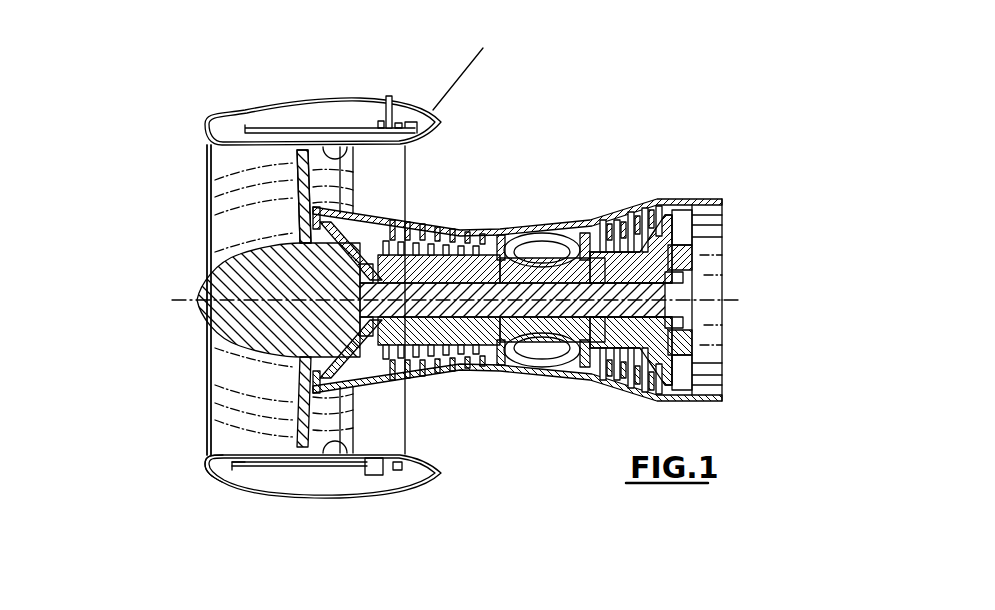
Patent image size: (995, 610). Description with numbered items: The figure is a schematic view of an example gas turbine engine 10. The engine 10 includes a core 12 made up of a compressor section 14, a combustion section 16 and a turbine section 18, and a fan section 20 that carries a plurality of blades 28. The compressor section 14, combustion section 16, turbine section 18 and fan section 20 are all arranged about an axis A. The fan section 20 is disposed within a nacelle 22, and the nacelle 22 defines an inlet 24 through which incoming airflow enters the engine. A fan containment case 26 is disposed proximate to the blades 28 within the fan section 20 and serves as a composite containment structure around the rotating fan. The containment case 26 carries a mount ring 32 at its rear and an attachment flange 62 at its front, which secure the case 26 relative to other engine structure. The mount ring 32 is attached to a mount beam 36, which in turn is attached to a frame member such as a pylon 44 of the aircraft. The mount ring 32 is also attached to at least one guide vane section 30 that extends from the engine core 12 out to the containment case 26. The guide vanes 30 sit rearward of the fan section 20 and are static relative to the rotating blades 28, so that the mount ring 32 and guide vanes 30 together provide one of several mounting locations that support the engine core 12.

The gas turbine engine 10 is at (116, 255).
The core 12 is at (485, 380).
The compressor section 14 is at (481, 204).
The combustion section 16 is at (587, 207).
The turbine section 18 is at (703, 175).
The fan section 20 is at (200, 530).
The nacelle 22 is at (205, 470).
The inlet 24 is at (206, 405).
The fan containment case 26 is at (280, 473).
The blades 28 is at (299, 186).
The guide vane section 30 is at (386, 434).
The mount ring 32 is at (400, 483).
The mount beam 36 is at (412, 118).
The pylon 44 is at (460, 73).
The attachment flange 62 is at (227, 481).
The axis A is at (180, 302).